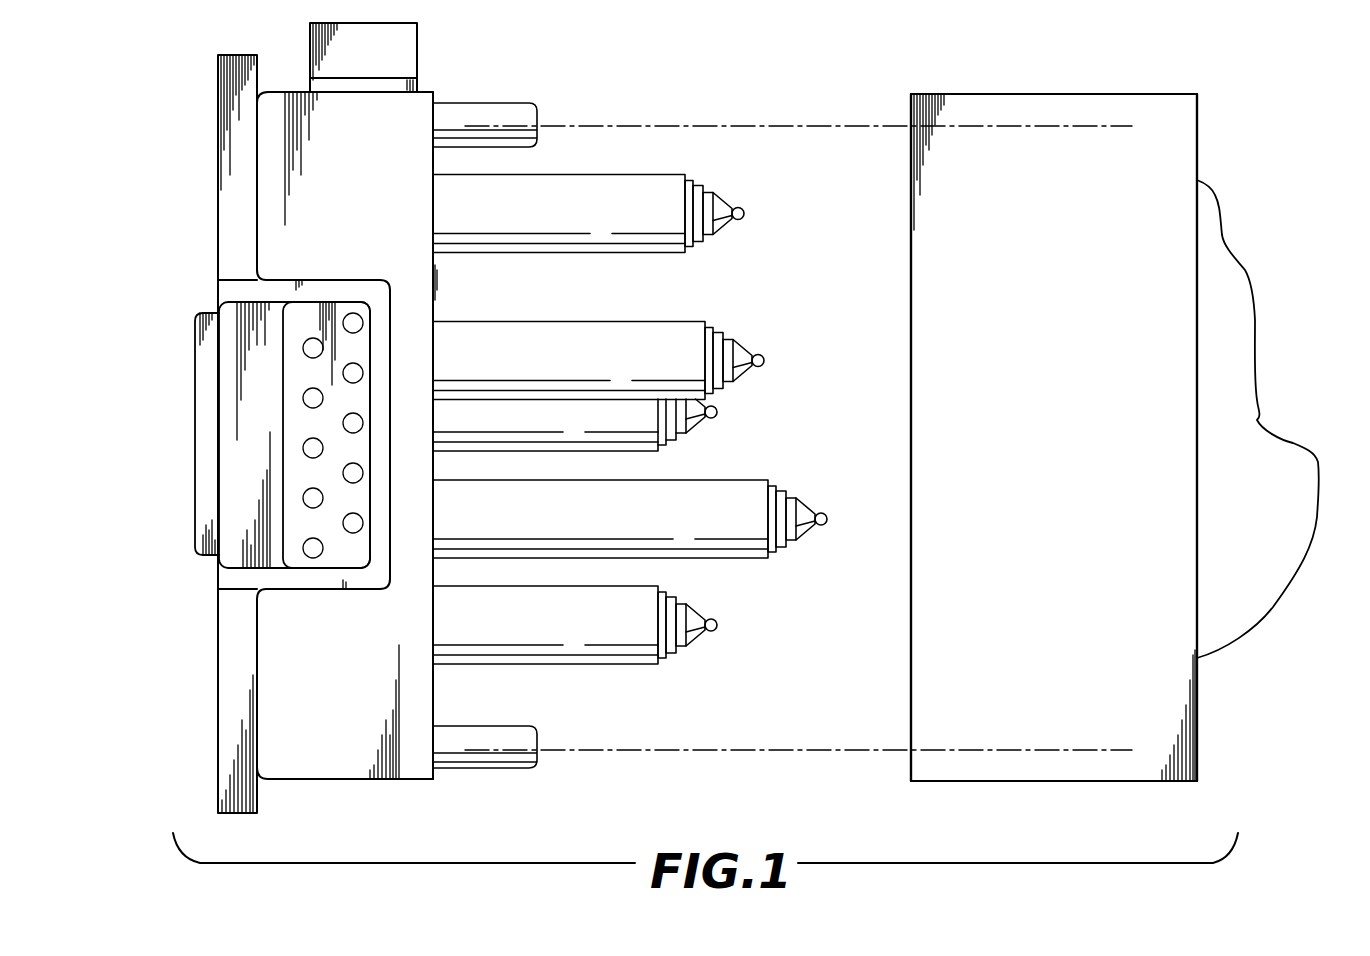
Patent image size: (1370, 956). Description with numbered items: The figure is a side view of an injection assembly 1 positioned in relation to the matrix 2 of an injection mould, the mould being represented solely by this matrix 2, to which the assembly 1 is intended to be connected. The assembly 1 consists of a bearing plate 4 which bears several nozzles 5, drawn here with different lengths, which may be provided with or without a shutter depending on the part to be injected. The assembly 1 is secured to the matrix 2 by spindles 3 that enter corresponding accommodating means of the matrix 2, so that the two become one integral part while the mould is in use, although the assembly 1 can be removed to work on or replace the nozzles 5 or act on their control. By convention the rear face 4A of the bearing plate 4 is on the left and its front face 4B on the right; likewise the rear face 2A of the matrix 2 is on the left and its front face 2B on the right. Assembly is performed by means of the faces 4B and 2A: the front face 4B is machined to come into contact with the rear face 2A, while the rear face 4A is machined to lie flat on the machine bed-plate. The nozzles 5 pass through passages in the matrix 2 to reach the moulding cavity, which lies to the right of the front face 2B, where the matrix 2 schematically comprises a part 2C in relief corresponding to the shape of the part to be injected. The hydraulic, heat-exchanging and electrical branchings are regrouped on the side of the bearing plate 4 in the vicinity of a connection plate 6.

The injection assembly 1 is at (365, 798).
The matrix 2 is at (1093, 763).
The rear face of the matrix 2A is at (910, 680).
The front face of the matrix 2B is at (1200, 716).
The part in relief 2C is at (1257, 420).
The spindle 3 is at (507, 103).
The bearing plate 4 is at (277, 155).
The rear face of the bearing plate 4A is at (218, 664).
The front face of the bearing plate 4B is at (436, 698).
The nozzle 5 is at (612, 183).
The connection plate 6 is at (337, 552).